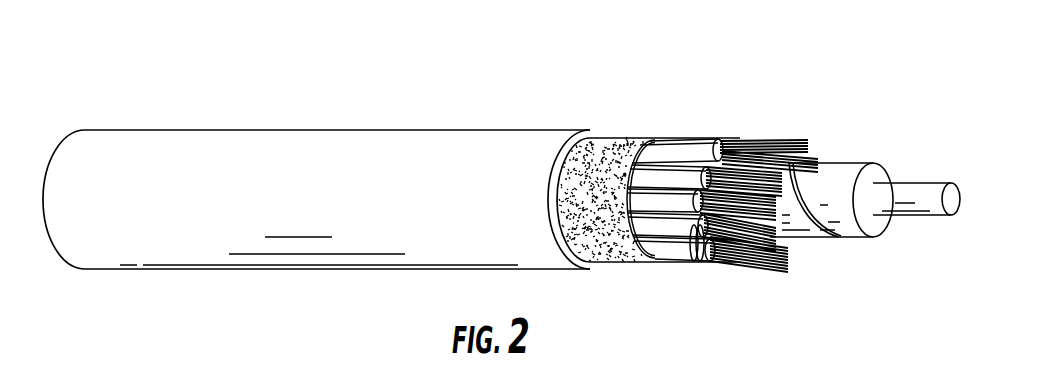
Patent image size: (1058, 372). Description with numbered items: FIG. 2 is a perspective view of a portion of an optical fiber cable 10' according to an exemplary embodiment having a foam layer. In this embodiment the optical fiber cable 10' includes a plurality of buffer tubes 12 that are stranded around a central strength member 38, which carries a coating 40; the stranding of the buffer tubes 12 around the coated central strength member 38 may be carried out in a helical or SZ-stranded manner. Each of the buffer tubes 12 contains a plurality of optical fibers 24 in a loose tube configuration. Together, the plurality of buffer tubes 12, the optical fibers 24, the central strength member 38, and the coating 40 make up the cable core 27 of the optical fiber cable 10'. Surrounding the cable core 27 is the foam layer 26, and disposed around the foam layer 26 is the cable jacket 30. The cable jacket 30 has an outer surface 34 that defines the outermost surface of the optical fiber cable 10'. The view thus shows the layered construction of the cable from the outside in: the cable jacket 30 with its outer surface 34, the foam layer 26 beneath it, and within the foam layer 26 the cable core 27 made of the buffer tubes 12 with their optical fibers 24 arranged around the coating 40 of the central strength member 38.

The optical fiber cable 10' is at (208, 81).
The cable jacket 30 is at (381, 152).
The outer surface 34 is at (286, 210).
The foam layer 26 is at (632, 140).
The buffer tube 12 is at (668, 158).
The optical fibers 24 is at (823, 142).
The cable core 27 is at (751, 129).
The coating 40 is at (843, 180).
The central strength member 38 is at (912, 186).